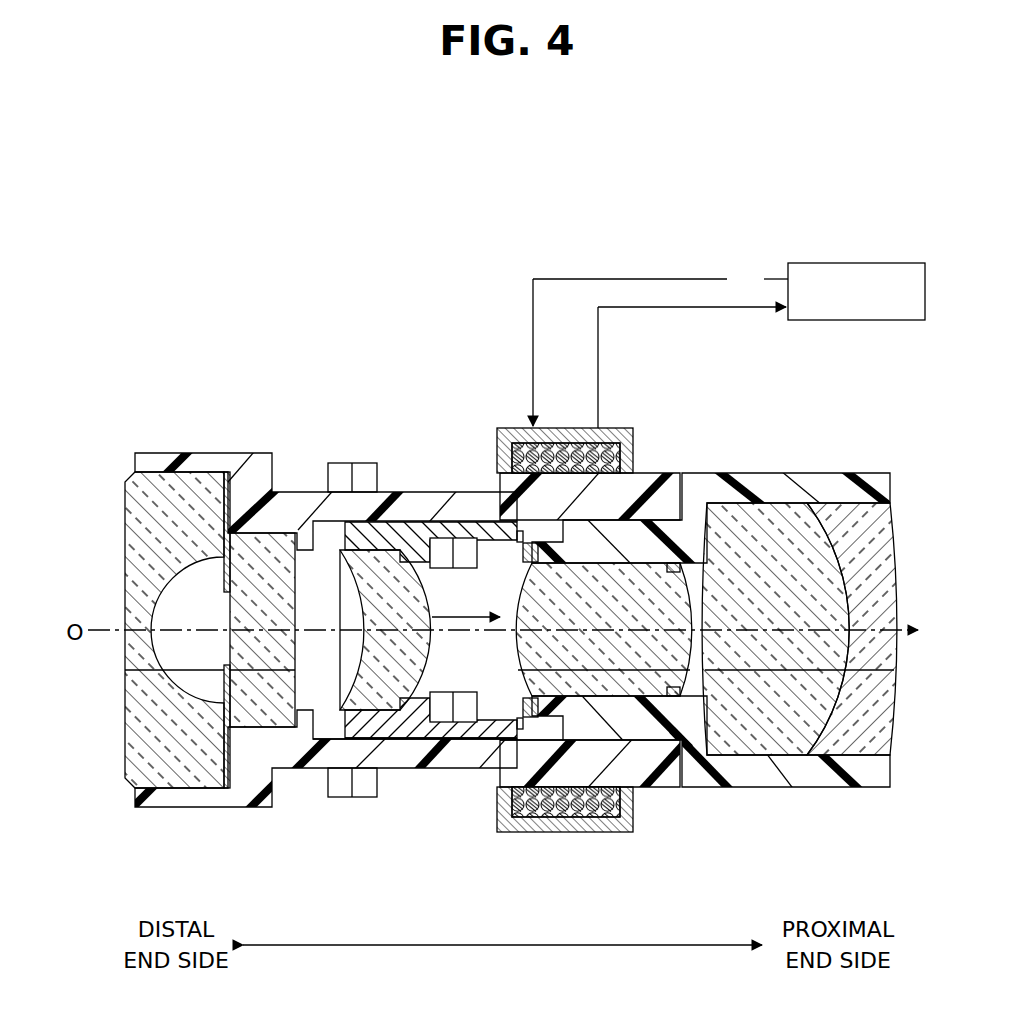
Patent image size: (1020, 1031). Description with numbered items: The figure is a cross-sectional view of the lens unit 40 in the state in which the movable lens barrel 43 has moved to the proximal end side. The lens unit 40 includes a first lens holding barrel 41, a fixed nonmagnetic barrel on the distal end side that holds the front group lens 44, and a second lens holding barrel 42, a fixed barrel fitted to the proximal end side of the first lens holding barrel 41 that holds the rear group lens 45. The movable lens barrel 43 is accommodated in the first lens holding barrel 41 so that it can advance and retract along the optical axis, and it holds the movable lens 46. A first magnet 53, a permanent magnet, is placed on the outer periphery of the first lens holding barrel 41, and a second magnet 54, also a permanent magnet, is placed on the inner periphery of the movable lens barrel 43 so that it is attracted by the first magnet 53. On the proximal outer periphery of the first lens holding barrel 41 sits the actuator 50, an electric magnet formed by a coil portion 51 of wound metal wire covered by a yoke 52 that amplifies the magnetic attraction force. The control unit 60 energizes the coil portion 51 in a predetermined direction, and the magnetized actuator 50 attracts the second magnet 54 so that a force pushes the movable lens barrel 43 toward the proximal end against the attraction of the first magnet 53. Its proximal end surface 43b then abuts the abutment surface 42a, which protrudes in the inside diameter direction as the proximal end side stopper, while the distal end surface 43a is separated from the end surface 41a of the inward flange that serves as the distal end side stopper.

The lens unit 40 is at (453, 382).
The first lens holding barrel 41 is at (207, 453).
The end surface 41a is at (333, 742).
The second lens holding barrel 42 is at (768, 473).
The abutment surface 42a is at (508, 730).
The movable lens barrel 43 is at (393, 522).
The distal end surface 43a is at (322, 738).
The proximal end surface 43b is at (523, 722).
The front group lens 44 is at (195, 668).
The rear group lens 45 is at (728, 672).
The movable lens 46 is at (420, 657).
The actuator 50 is at (608, 414).
The coil portion 51 is at (578, 428).
The yoke 52 is at (546, 428).
The first magnet 53 is at (352, 463).
The second magnet 54 is at (447, 538).
The control unit 60 is at (860, 263).